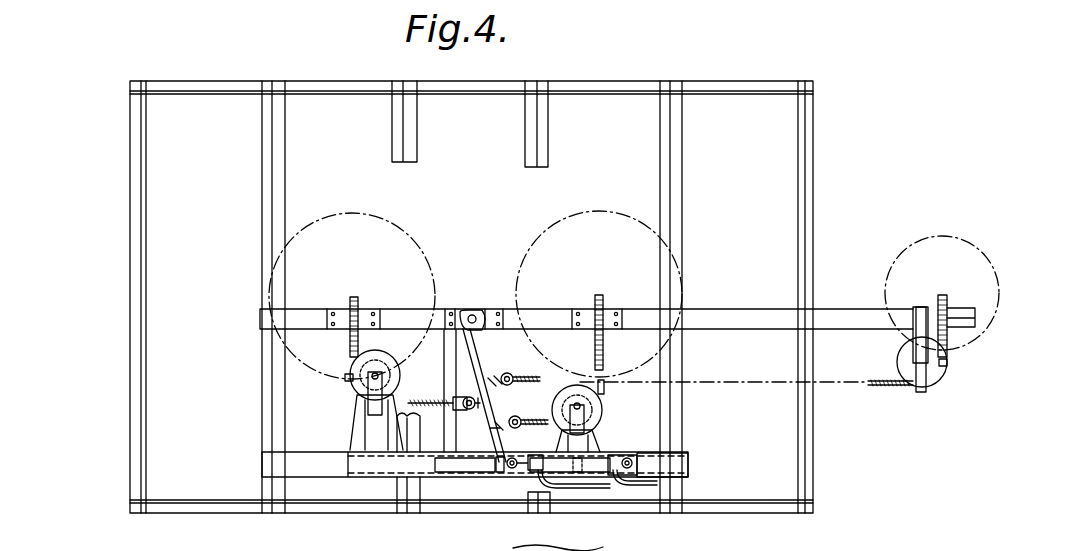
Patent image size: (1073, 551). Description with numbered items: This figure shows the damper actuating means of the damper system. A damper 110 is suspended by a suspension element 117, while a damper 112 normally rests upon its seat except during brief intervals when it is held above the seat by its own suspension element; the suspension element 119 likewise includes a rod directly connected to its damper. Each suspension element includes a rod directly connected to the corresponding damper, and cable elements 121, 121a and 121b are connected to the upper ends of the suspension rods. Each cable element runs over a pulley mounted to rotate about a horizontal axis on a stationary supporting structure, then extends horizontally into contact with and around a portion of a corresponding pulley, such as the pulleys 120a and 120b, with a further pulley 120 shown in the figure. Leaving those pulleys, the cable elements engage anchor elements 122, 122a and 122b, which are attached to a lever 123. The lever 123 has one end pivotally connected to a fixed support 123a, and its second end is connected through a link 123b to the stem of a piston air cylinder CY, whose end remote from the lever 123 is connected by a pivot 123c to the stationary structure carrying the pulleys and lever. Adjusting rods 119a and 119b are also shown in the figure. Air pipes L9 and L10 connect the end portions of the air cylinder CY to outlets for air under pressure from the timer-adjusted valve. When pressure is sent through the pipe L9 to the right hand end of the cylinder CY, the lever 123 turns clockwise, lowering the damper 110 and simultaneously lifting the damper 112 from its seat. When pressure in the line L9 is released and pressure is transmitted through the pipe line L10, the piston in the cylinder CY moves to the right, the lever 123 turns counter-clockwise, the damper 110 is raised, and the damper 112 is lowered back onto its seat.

The damper 110 is at (412, 221).
The damper 112 is at (603, 212).
The suspension element 117 is at (942, 238).
The suspension element 119 is at (352, 358).
The adjusting rod 119a is at (594, 362).
The adjusting rod 119b is at (884, 388).
The sprocket 120 is at (382, 372).
The pulley 120a is at (584, 398).
The pulley 120b is at (935, 372).
The cable element 121 is at (356, 297).
The cable element 121a is at (600, 296).
The cable element 121b is at (944, 296).
The anchor element 122 is at (458, 400).
The anchor element 122a is at (516, 416).
The anchor element 122b is at (505, 376).
The lever 123 is at (477, 358).
The fixed support 123a is at (481, 310).
The link 123b is at (512, 468).
The pivot 123c is at (633, 463).
The piston air cylinder CY is at (595, 460).
The air pipe L9 is at (638, 488).
The air pipe L10 is at (585, 492).